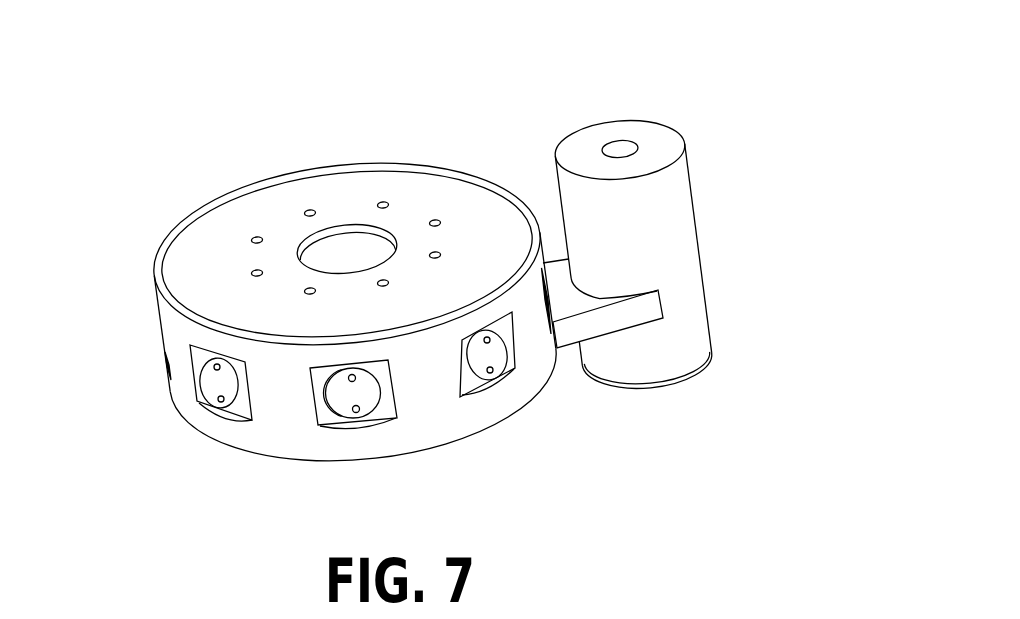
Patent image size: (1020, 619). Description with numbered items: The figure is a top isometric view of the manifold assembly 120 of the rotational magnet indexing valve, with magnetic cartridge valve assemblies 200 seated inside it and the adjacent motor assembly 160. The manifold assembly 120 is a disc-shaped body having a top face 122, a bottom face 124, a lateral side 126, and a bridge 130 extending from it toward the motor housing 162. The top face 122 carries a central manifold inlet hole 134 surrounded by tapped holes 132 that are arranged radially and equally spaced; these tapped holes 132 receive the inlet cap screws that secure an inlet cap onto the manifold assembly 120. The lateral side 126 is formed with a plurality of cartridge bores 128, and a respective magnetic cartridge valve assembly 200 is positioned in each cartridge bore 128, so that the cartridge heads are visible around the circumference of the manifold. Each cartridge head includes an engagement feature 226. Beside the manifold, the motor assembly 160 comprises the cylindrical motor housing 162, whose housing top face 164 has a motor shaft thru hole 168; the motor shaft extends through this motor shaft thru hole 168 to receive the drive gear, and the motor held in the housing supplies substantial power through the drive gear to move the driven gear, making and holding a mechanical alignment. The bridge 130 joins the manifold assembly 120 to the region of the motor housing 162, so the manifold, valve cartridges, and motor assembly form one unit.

The manifold assembly 120 is at (312, 112).
The top face 122 is at (408, 185).
The bottom face 124 is at (260, 457).
The lateral side 126 is at (437, 413).
The cartridge bores 128 is at (335, 413).
The bridge 130 is at (618, 332).
The tapped holes 132 is at (253, 240).
The manifold inlet hole 134 is at (397, 237).
The motor assembly 160 is at (782, 137).
The motor housing 162 is at (698, 239).
The housing top face 164 is at (660, 137).
The motor shaft thru hole 168 is at (630, 140).
The magnetic cartridge valve assembly 200 is at (203, 388).
The engagement feature 226 is at (212, 407).